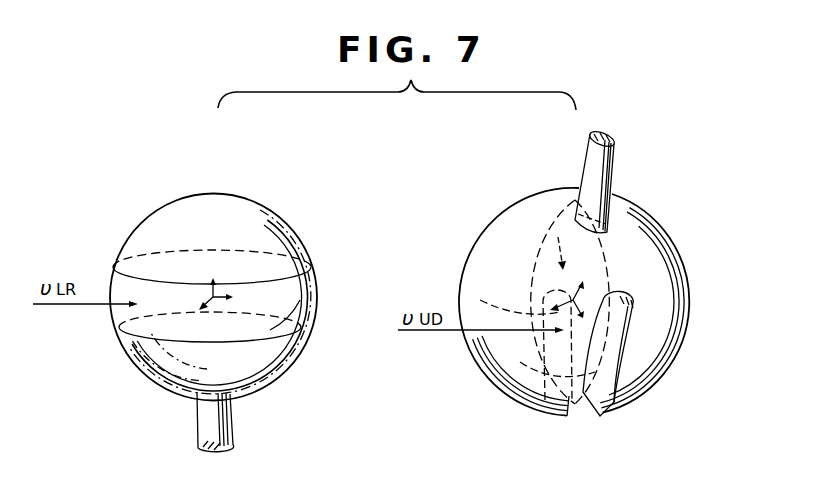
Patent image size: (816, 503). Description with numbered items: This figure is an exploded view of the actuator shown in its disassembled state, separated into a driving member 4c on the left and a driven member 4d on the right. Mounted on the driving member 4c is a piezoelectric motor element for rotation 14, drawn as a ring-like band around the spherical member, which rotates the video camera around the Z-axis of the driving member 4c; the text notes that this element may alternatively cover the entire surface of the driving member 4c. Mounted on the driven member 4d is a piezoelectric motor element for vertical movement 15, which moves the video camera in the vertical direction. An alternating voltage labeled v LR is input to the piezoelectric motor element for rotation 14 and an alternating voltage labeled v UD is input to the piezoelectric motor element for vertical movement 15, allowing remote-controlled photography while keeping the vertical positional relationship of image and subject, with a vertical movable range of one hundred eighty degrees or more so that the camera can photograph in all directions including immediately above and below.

The driving member 4c is at (240, 194).
The piezoelectric motor element for rotation 14 is at (268, 307).
The driven member 4d is at (671, 240).
The piezoelectric motor element for vertical movement 15 is at (627, 220).